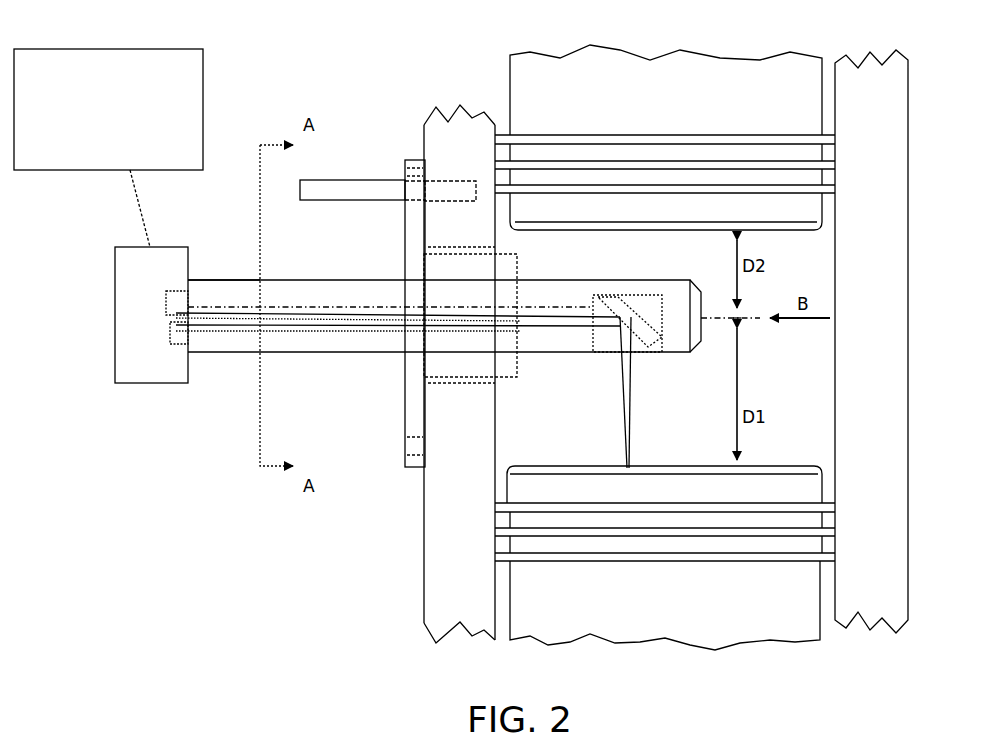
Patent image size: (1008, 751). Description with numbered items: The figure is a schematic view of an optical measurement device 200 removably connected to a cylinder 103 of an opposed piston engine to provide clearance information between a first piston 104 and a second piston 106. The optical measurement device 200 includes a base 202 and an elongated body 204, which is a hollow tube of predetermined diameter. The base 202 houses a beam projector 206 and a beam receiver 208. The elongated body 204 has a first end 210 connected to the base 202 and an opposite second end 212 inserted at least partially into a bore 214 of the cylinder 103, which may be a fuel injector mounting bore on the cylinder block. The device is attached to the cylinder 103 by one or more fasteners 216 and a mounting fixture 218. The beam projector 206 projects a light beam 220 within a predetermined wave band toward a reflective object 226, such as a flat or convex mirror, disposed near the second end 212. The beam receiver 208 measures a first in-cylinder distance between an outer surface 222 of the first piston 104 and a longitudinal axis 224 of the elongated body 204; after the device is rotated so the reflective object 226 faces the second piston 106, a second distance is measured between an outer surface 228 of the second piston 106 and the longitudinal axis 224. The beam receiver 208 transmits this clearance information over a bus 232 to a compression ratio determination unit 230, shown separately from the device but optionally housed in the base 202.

The cylinder 103 is at (421, 597).
The first piston 104 is at (533, 637).
The second piston 106 is at (510, 86).
The optical measurement device 200 is at (98, 331).
The base 202 is at (157, 383).
The elongated body 204 is at (335, 360).
The beam projector 206 is at (180, 347).
The beam receiver 208 is at (180, 290).
The first end 210 is at (188, 280).
The second end 212 is at (690, 280).
The bore 214 is at (495, 383).
The fasteners 216 is at (336, 180).
The mounting fixture 218 is at (405, 255).
The light beam 220 is at (627, 407).
The outer surface 222 is at (773, 468).
The longitudinal axis 224 is at (770, 316).
The reflective object 226 is at (648, 321).
The outer surface 228 is at (777, 230).
The compression ratio determination unit 230 is at (108, 109).
The bus 232 is at (142, 220).